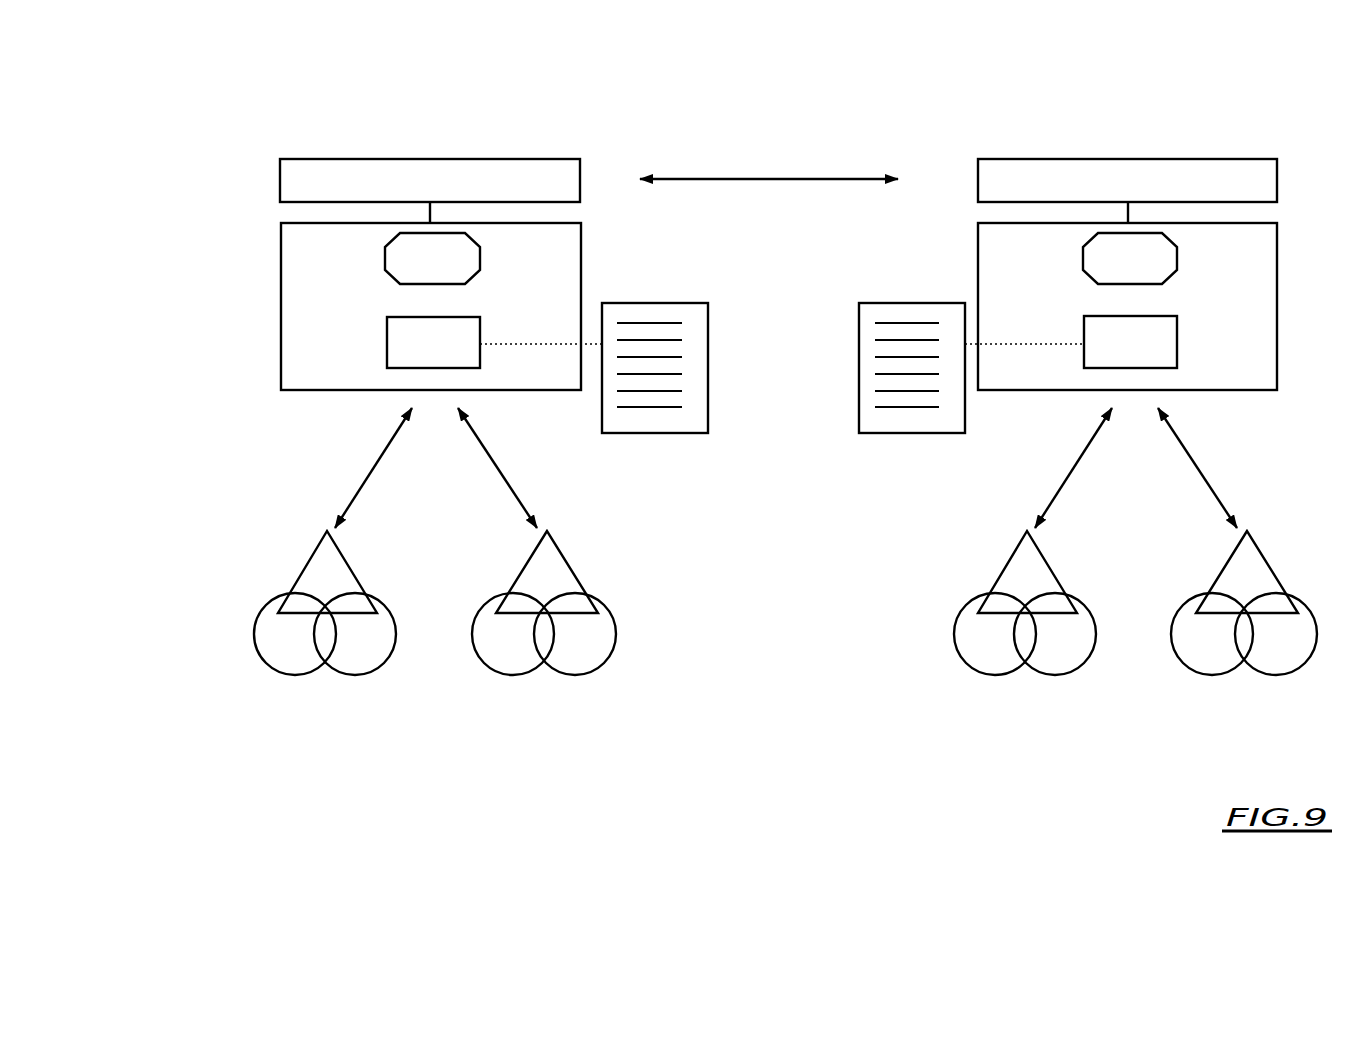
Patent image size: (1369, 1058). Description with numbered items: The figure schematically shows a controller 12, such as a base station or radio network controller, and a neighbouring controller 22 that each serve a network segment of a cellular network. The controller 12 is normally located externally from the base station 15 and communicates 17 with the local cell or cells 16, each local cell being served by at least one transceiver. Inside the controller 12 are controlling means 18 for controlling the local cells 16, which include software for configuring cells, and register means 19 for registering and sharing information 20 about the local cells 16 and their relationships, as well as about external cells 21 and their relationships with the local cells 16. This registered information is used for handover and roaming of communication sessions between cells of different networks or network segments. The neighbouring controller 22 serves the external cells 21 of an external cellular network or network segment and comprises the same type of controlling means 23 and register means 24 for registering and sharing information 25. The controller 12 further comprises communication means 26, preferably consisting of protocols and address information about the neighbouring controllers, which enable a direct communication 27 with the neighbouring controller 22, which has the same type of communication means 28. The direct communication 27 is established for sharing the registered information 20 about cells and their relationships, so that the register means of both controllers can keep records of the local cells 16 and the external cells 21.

The controller 12 is at (310, 302).
The controlling means 18 is at (398, 263).
The register means 19 is at (400, 353).
The information 20 is at (629, 305).
The communication means 26 is at (455, 167).
The direct communication 27 is at (775, 178).
The communication 17 is at (367, 470).
The base station 15 is at (323, 569).
The local cells 16 is at (302, 660).
The external cells 21 is at (1002, 660).
The neighbouring controller 22 is at (1243, 291).
The controlling means 23 is at (1165, 263).
The register means 24 is at (1165, 355).
The information 25 is at (917, 307).
The communication means 28 is at (1131, 162).